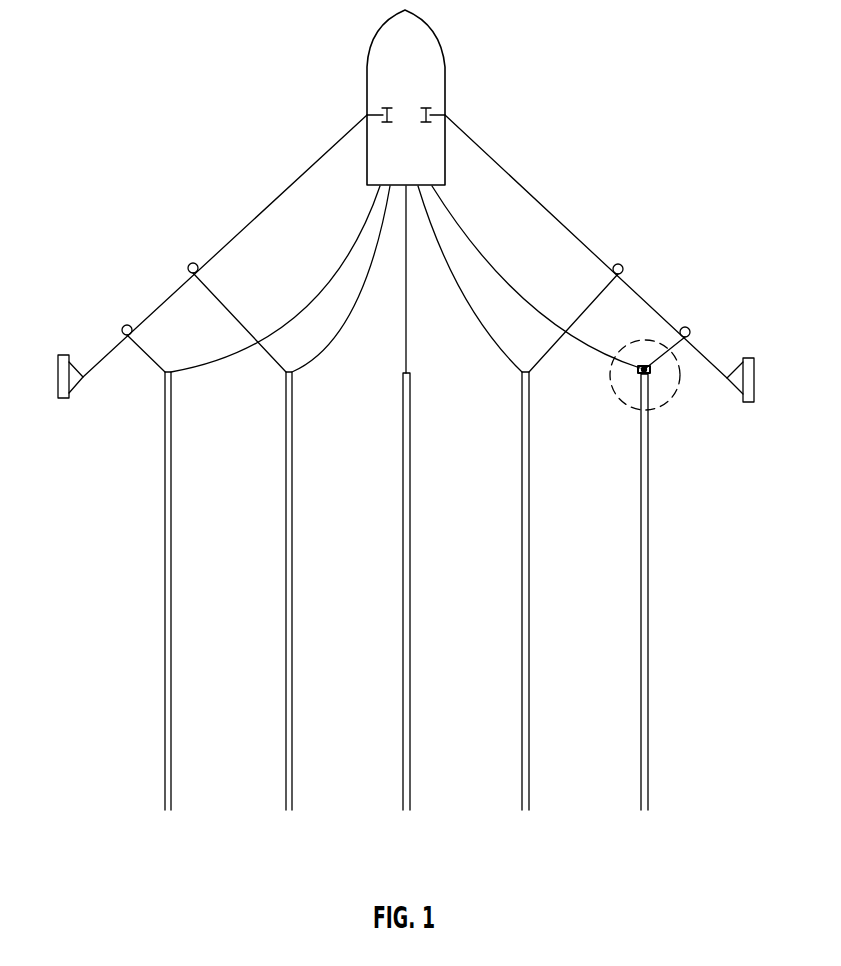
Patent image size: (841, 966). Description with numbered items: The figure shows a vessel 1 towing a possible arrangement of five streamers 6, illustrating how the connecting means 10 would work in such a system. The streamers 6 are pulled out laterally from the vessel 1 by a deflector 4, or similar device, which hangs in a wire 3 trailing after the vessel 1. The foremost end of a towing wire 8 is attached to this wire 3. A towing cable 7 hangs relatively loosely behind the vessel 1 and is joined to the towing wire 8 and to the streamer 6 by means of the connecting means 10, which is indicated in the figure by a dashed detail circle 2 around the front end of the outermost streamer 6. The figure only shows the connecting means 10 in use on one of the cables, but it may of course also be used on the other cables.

The vessel 1 is at (445, 82).
The streamer front-end connection region 2 is at (668, 405).
The wire 3 is at (544, 206).
The deflector 4 is at (748, 358).
The streamer 6 is at (165, 630).
The towing cable 7 is at (482, 326).
The towing wire 8 is at (598, 292).
The connecting means 10 is at (633, 386).